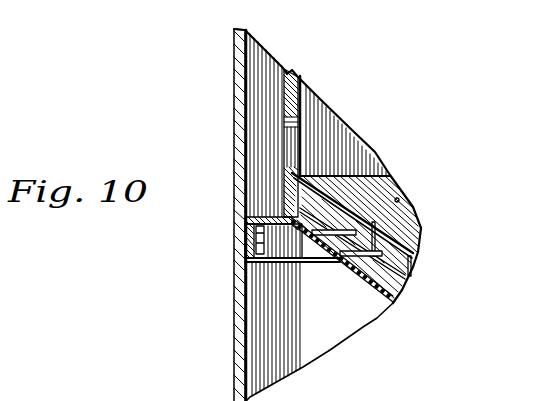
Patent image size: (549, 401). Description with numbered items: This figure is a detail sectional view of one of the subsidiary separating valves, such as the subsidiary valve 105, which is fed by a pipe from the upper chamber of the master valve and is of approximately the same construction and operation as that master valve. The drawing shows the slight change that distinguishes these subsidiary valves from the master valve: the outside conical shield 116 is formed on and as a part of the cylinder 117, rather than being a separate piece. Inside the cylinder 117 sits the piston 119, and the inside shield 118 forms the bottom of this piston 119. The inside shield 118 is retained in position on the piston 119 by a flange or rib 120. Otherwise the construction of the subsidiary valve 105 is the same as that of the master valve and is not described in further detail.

The subsidiary valve 105 is at (233, 128).
The outside conical shield 116 is at (348, 283).
The cylinder 117 is at (237, 262).
The inside shield 118 is at (413, 210).
The piston 119 is at (302, 98).
The flange or rib 120 is at (352, 152).